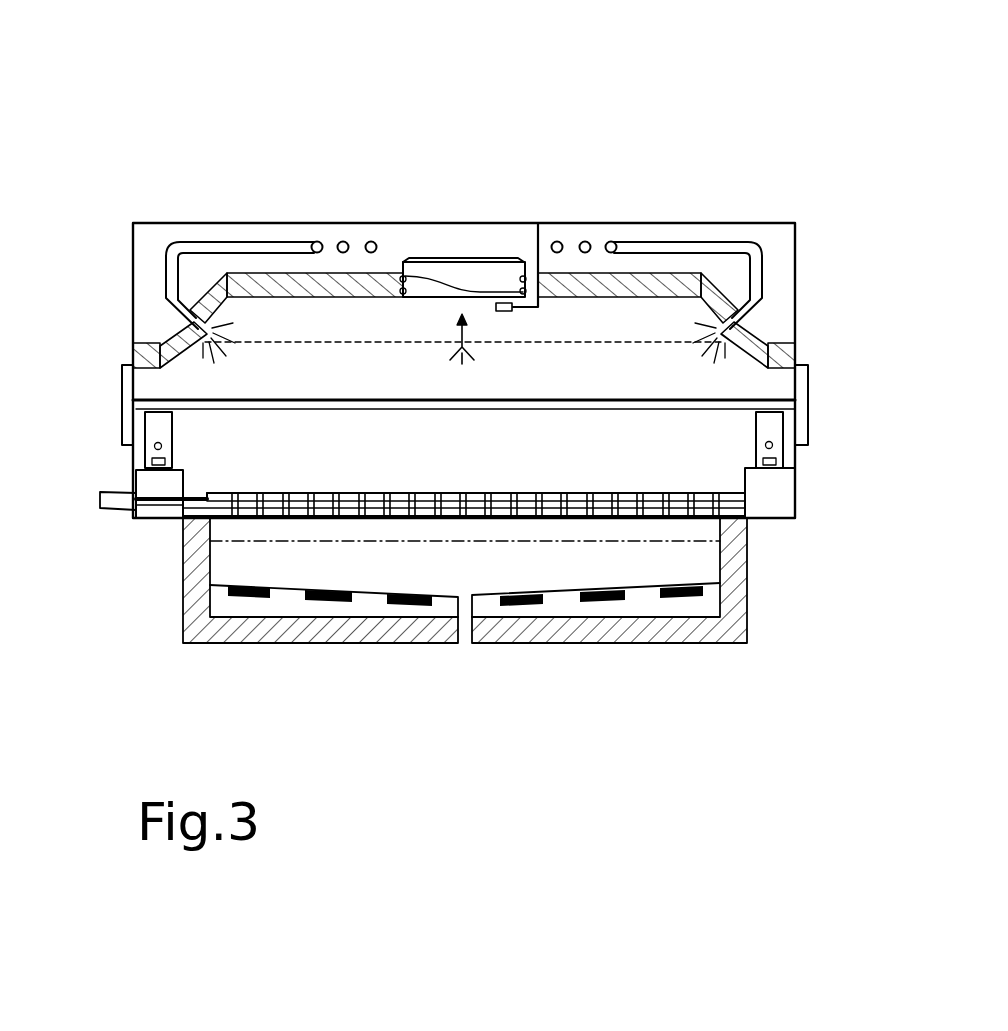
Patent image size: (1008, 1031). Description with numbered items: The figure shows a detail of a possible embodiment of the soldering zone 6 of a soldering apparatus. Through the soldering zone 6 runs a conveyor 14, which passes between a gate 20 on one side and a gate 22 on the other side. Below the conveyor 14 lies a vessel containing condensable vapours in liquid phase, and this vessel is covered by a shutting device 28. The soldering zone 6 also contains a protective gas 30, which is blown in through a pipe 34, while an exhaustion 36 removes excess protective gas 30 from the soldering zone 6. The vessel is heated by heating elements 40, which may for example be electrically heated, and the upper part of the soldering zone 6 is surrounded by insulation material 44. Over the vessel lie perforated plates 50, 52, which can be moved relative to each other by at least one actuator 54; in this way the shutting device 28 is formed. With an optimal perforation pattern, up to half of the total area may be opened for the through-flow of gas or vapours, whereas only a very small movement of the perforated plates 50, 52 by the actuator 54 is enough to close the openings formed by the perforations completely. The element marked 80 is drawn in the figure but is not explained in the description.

The soldering zone 6 is at (518, 147).
The conveyor 14 is at (593, 400).
The gate 20 is at (122, 370).
The gate 22 is at (808, 405).
The shutting device 28 is at (695, 498).
The protective gas 30 is at (292, 337).
The pipe 34 is at (168, 245).
The exhaustion 36 is at (485, 282).
The heating elements 40 is at (680, 597).
The insulation material 44 is at (545, 275).
The perforated plate 50 is at (220, 512).
The perforated plate 52 is at (210, 493).
The actuator 54 is at (117, 512).
The sensor 80 is at (527, 307).